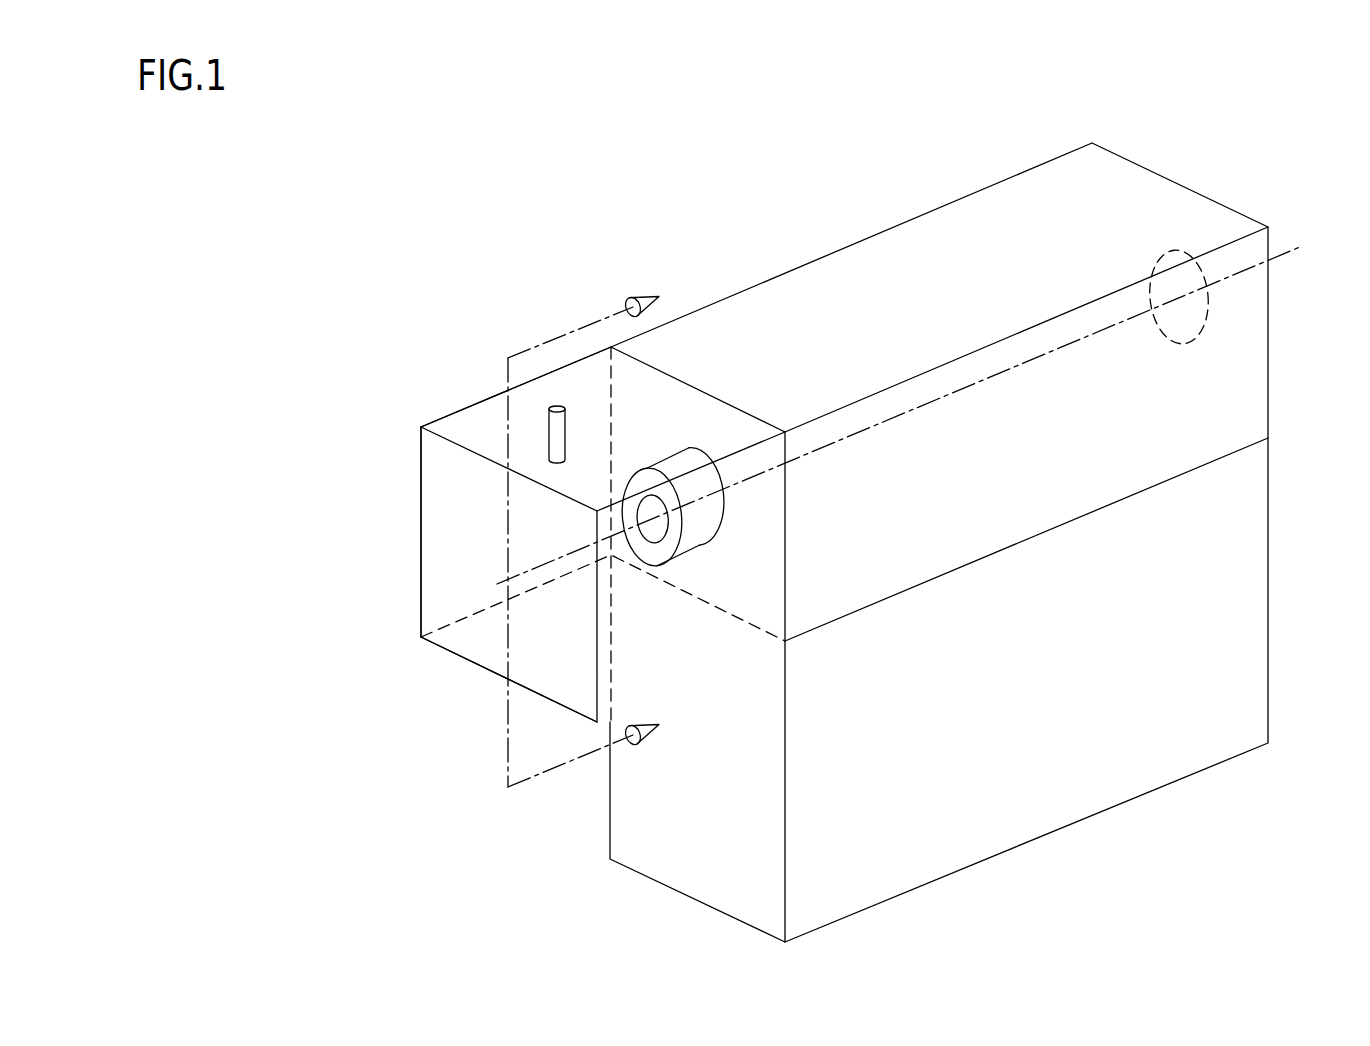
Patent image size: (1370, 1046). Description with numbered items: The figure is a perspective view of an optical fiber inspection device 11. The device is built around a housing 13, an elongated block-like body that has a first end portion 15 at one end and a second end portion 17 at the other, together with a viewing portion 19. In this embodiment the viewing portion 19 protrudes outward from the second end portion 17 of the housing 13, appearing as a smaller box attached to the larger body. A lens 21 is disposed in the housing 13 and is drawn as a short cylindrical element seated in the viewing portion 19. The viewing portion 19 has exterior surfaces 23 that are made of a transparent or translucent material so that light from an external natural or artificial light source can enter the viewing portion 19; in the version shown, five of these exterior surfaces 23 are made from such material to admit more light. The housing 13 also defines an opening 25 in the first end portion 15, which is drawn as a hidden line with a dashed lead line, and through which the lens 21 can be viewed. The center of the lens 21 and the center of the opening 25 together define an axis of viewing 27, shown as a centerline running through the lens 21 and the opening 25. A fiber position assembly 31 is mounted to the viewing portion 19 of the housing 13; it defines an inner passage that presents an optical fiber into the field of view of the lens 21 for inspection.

The optical fiber inspection device 11 is at (418, 271).
The housing 13 is at (866, 264).
The first end portion 15 is at (1237, 208).
The second end portion 17 is at (641, 828).
The viewing portion 19 is at (438, 497).
The lens 21 is at (690, 462).
The exterior surface 23 is at (468, 430).
The opening 25 is at (1198, 330).
The axis of viewing 27 is at (1287, 247).
The fiber position assembly 31 is at (574, 419).